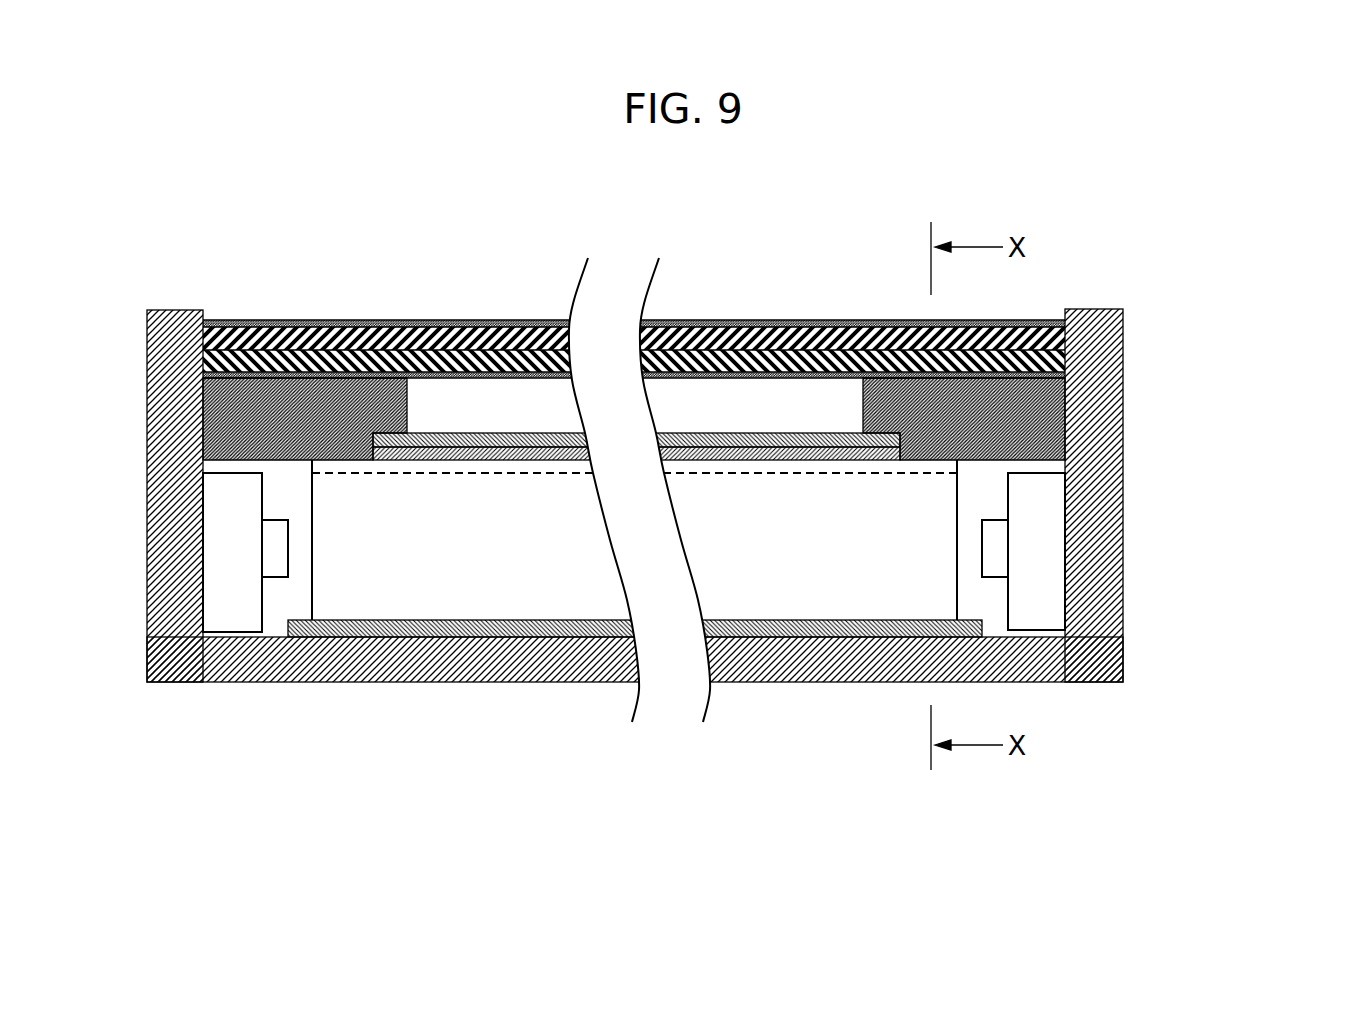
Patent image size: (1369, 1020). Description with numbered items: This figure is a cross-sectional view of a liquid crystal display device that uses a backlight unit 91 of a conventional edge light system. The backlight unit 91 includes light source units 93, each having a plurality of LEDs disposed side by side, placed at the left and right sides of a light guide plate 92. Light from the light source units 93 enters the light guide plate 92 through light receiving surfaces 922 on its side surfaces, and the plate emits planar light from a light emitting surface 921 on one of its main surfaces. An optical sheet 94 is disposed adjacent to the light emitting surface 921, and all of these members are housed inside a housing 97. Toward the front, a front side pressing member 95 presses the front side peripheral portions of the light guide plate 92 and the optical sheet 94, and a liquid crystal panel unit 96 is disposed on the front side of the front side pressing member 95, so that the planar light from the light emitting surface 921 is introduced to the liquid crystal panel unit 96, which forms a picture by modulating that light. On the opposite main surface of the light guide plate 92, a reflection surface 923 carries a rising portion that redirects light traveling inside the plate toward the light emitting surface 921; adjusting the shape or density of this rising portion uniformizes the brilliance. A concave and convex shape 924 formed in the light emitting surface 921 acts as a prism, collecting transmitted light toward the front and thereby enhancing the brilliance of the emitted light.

The backlight unit 91 is at (1207, 519).
The light guide plate 92 is at (617, 504).
The light emitting surface 921 is at (535, 447).
The light receiving surfaces 922 is at (312, 593).
The reflection surface 923 is at (540, 620).
The concave and convex shape 924 is at (777, 470).
The light source units 93 is at (222, 533).
The optical sheet 94 is at (1065, 447).
The front side pressing member 95 is at (203, 420).
The liquid crystal panel unit 96 is at (1065, 348).
The housing 97 is at (197, 677).